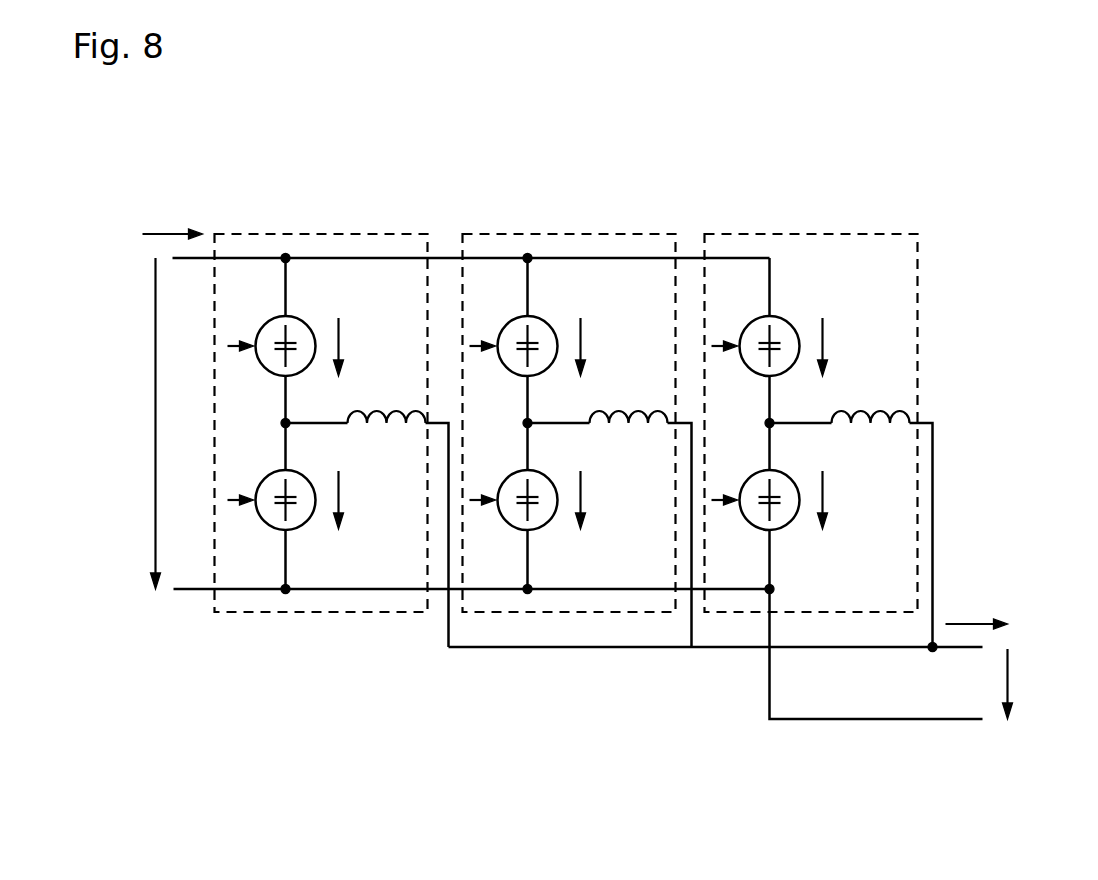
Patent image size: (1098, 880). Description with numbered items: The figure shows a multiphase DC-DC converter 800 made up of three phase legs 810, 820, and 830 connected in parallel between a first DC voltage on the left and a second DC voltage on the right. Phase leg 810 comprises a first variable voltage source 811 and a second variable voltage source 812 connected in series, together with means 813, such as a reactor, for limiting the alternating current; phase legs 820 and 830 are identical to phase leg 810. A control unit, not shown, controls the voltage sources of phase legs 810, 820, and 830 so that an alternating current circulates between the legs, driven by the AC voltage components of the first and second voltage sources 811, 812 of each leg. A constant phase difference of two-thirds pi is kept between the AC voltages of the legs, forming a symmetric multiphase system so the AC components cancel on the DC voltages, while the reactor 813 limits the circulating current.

The converter 800 is at (584, 467).
The phase leg 810 is at (332, 418).
The phase leg 820 is at (577, 418).
The phase leg 830 is at (819, 418).
The first variable voltage source 811 is at (291, 331).
The second variable voltage source 812 is at (291, 519).
The means for limiting the alternating current 813 is at (367, 529).